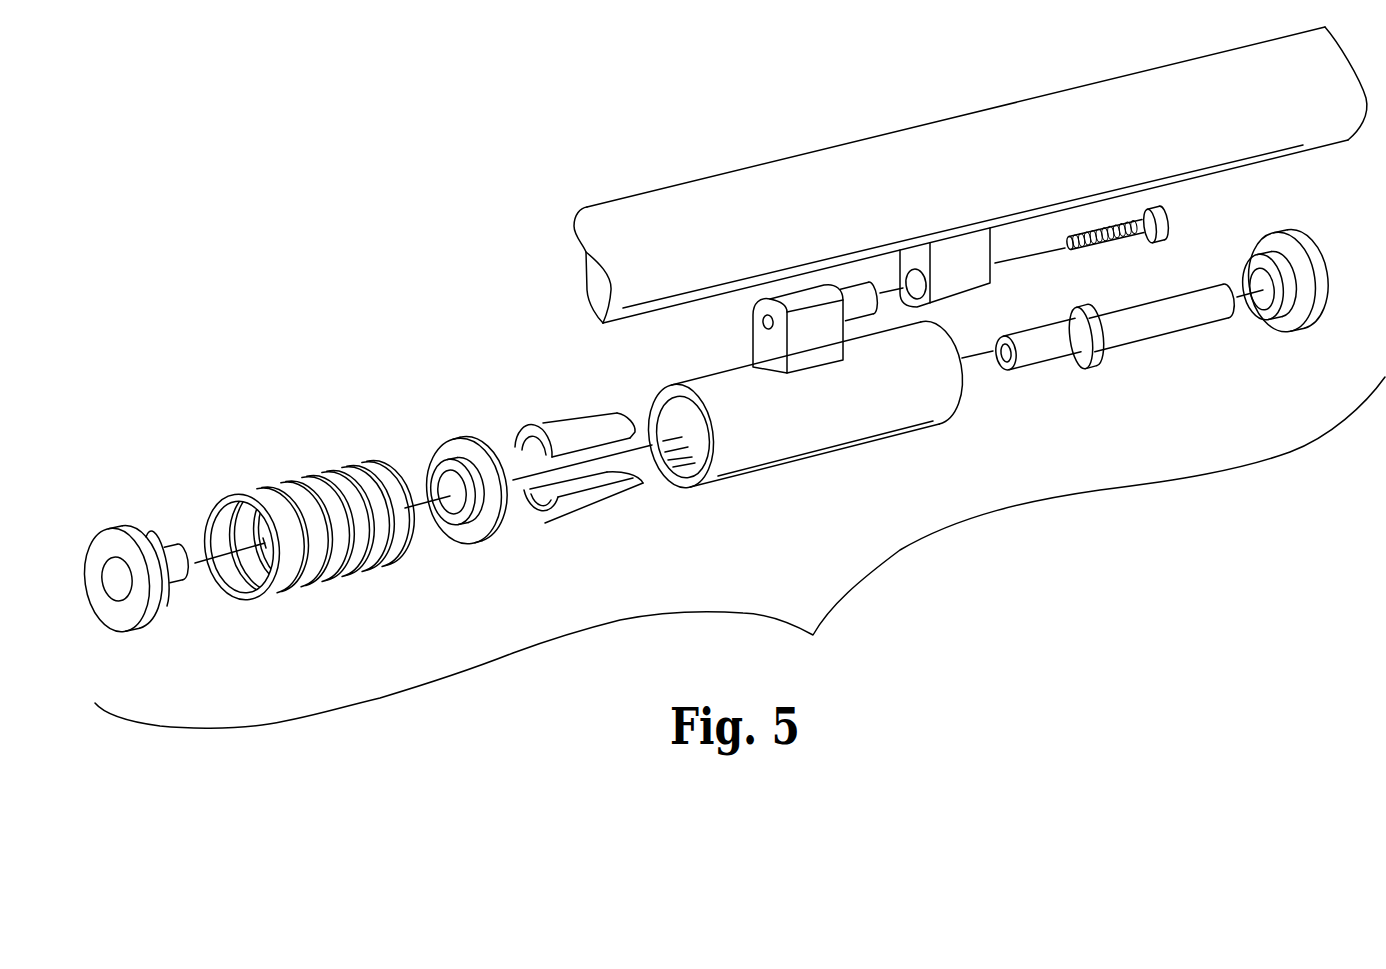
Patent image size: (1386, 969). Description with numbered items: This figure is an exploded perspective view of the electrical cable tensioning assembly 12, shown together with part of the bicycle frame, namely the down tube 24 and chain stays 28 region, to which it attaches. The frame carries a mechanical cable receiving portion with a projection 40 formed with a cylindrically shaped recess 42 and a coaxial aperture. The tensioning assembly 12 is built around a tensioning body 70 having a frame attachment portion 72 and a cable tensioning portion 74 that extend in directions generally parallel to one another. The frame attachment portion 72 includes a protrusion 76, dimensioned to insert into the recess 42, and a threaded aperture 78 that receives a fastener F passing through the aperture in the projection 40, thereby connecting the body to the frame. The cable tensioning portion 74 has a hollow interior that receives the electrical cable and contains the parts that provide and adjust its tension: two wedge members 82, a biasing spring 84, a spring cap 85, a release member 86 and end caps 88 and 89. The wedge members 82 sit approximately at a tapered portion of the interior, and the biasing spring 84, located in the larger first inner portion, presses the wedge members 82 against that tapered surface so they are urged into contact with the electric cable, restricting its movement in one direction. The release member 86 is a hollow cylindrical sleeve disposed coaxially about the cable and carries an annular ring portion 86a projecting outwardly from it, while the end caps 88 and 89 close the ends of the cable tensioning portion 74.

The electrical cable tensioning assembly 12 is at (740, 552).
The down tube 24 is at (970, 175).
The chain stays 28 is at (912, 167).
The projection 40 is at (981, 256).
The recess 42 is at (907, 281).
The fastener F is at (1167, 227).
The protrusion 76 is at (858, 293).
The threaded aperture 78 is at (767, 348).
The frame attachment portion 72 is at (755, 329).
The cable tensioning portion 74 is at (777, 436).
The tensioning body 70 is at (817, 425).
The wedge members 82 is at (573, 428).
The spring cap 85 is at (482, 532).
The biasing spring 84 is at (297, 580).
The end cap 88 is at (127, 628).
The release member 86 is at (1128, 358).
The annular ring portion 86a is at (1095, 364).
The end cap 89 is at (1292, 327).